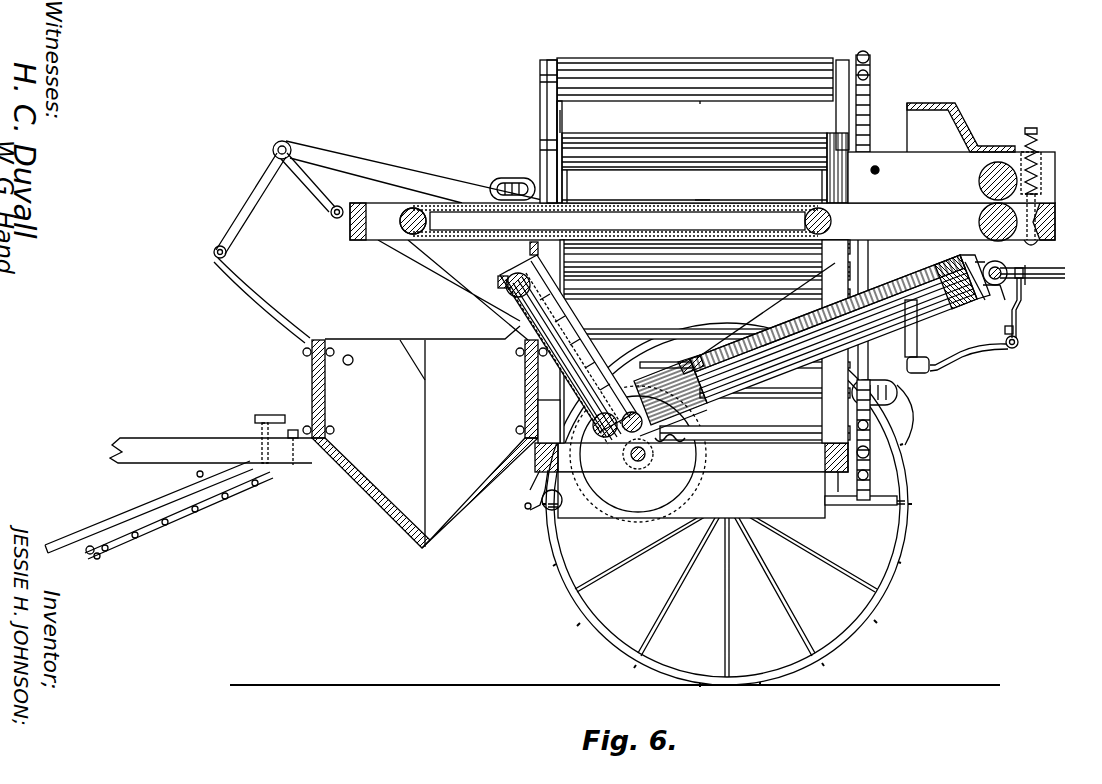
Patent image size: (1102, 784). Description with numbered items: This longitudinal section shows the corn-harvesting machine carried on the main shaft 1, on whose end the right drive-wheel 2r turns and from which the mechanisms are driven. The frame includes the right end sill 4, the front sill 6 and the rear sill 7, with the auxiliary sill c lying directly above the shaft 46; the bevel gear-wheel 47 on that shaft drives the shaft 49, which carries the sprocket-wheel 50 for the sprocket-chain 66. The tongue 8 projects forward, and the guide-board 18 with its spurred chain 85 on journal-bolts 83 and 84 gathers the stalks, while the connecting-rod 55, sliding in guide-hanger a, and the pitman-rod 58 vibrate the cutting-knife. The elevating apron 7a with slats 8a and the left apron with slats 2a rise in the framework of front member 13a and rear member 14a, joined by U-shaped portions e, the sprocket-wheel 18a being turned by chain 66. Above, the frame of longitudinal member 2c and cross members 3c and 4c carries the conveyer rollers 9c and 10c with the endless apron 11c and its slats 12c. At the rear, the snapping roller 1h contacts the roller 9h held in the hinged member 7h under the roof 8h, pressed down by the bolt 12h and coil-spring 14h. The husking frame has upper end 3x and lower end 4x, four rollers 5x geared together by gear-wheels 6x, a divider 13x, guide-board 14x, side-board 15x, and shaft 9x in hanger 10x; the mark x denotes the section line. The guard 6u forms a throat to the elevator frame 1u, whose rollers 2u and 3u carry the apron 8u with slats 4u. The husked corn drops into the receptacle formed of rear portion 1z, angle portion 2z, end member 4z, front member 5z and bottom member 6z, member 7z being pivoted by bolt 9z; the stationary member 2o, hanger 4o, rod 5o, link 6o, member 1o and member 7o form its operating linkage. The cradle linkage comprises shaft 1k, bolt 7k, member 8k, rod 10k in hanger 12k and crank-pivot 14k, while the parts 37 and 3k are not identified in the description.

The main shaft 1 is at (716, 530).
The right drive-wheel 2r is at (895, 570).
The bevel gear-wheel 47 is at (710, 483).
The auxiliary sill c is at (691, 457).
The right end sill 4 is at (822, 512).
The rear sill 7 is at (838, 490).
The shaft 46 is at (646, 454).
The pinion 37 is at (560, 499).
The front sill 6 is at (528, 476).
The connecting-rod 55 is at (535, 490).
The pitman-rod 58 is at (519, 515).
The front member of husked-corn receptacle 5z is at (326, 398).
The forward bottom member 6z is at (375, 500).
The angle portion 2z is at (478, 505).
The rear portion of husked-corn receptacle 1z is at (524, 397).
The pivot member 7z is at (370, 348).
The end member 4z is at (413, 350).
The pivot bolt 9z is at (346, 355).
The member 1o is at (308, 340).
The tongue 8 is at (130, 444).
The guide-board 18 is at (58, 543).
The sprocket-chain 85 is at (192, 505).
The journal-bolt 84 is at (197, 474).
The journal-bolt 83 is at (98, 552).
The member 7o is at (365, 166).
The link 6o is at (248, 198).
The rod 5o is at (326, 205).
The hanger 4o is at (330, 214).
The stationary member 2o is at (436, 268).
The longitudinal member 2c is at (702, 221).
The cross member 3c is at (349, 230).
The cross member 4c is at (1056, 222).
The slats 12c is at (400, 220).
The front conveyer roller 10c is at (400, 228).
The conveyer roller 9c is at (831, 221).
The endless apron 11c is at (583, 208).
The U-shaped portions e is at (500, 178).
The guide-hanger a is at (695, 130).
The right apron 7a is at (607, 120).
The slats 8a is at (692, 100).
The slats 2a is at (702, 171).
The front member 13a is at (548, 60).
The rear member 14a is at (842, 60).
The sprocket-chain 66 is at (870, 117).
The sprocket-wheel 18a is at (869, 58).
The member 7h is at (951, 177).
The upper snapping roller 9h is at (978, 180).
The snapping roller 1h is at (978, 222).
The roof member 8h is at (990, 146).
The bolt 12h is at (1034, 127).
The coil-spring 14h is at (1040, 145).
The endless apron 8u is at (582, 345).
The elevator frame 1u is at (502, 325).
The elevator roller 3u is at (510, 278).
The slats 4u is at (570, 316).
The elevator roller 2u is at (610, 438).
The divider 13x is at (798, 330).
The guard 6u is at (668, 376).
The side-board 15x is at (750, 312).
The husking rollers 5x is at (732, 400).
The lower end piece 4x is at (670, 434).
The guide-board 14x is at (948, 275).
The upper end piece 3x is at (955, 308).
The gear-wheels 6x is at (975, 298).
The shaft 9x is at (1002, 265).
The hanger 10x is at (1001, 300).
The section line x is at (1064, 274).
The shaft 1k is at (1058, 282).
The bolt 7k is at (1024, 276).
The member 8k is at (1017, 322).
The pivot 3k is at (1019, 342).
The crank-pivot 14k is at (1011, 349).
The rod 10k is at (940, 363).
The hanger 12k is at (925, 363).
The shaft 49 is at (868, 455).
The sprocket-wheel 50 is at (869, 477).